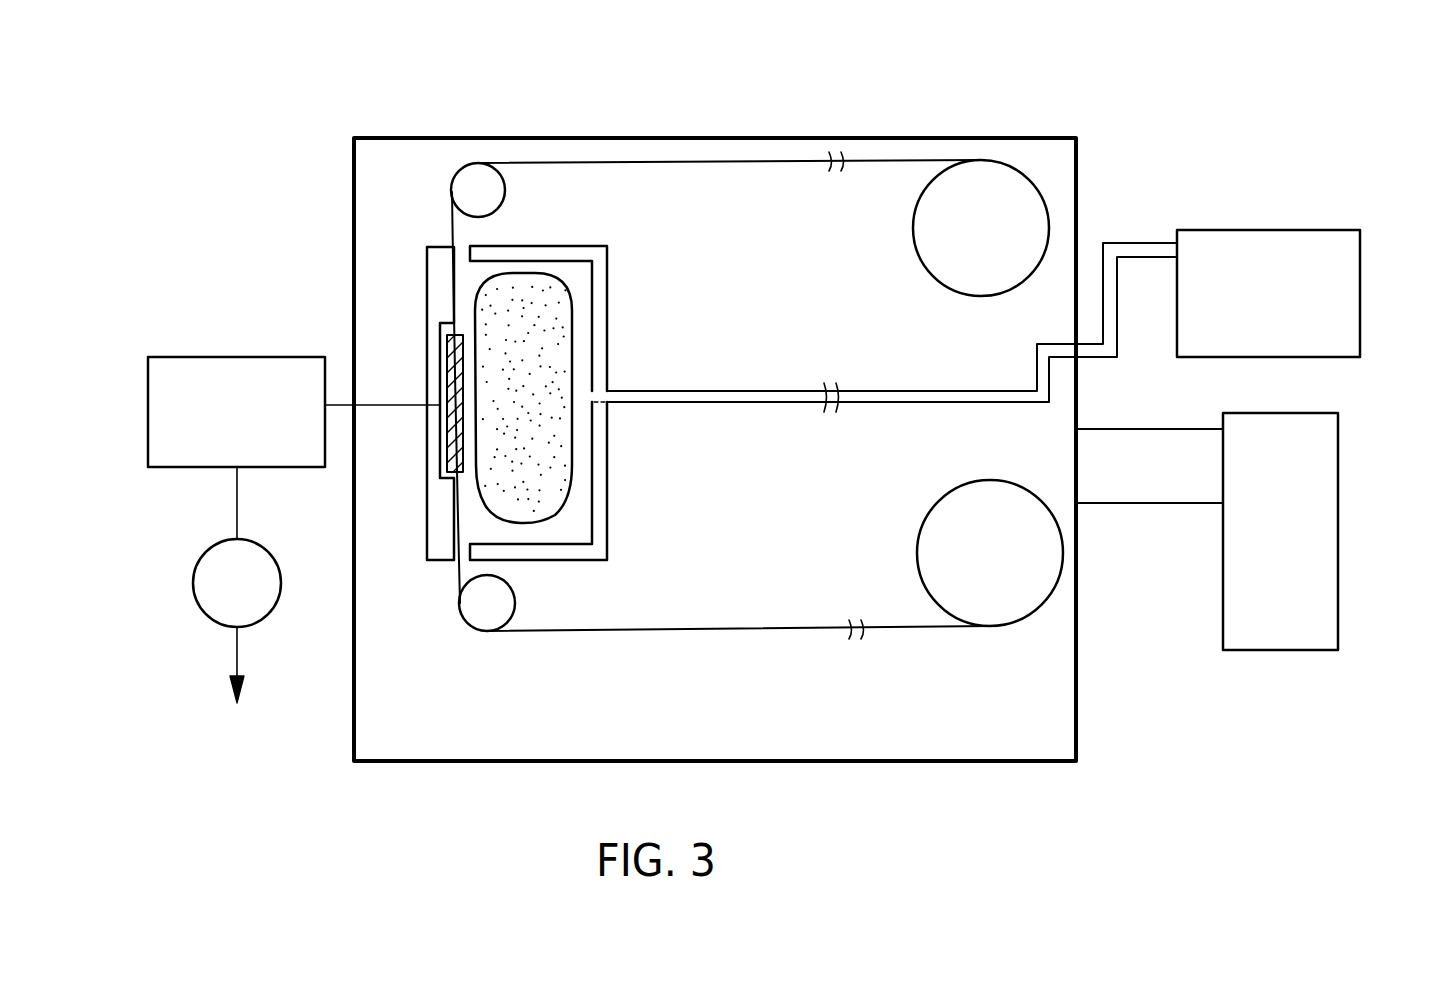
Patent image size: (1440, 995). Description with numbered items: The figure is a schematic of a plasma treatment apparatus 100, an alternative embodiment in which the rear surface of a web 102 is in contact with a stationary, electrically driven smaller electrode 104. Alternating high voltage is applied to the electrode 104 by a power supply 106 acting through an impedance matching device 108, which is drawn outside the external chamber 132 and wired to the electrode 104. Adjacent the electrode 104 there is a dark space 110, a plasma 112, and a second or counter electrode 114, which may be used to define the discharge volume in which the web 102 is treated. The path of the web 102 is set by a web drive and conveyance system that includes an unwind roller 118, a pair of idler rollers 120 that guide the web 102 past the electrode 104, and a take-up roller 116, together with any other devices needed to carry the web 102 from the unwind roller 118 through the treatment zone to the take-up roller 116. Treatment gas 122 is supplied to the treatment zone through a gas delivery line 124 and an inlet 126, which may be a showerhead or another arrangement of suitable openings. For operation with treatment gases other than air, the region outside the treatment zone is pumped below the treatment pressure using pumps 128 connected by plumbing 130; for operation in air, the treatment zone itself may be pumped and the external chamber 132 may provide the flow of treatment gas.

The apparatus 100 is at (946, 99).
The web 102 is at (647, 631).
The electrode 104 is at (458, 383).
The power supply 106 is at (207, 587).
The impedance matching device 108 is at (177, 357).
The dark space 110 is at (469, 323).
The plasma 112 is at (562, 320).
The second electrode 114 is at (603, 248).
The take-up roller 116 is at (930, 533).
The unwind roller 118 is at (932, 235).
The idler rollers 120 is at (496, 193).
The treatment gas 122 is at (1212, 238).
The gas delivery line 124 is at (722, 402).
The inlet 126 is at (599, 391).
The pumps 128 is at (1327, 468).
The plumbing 130 is at (1145, 488).
The external chamber 132 is at (923, 763).